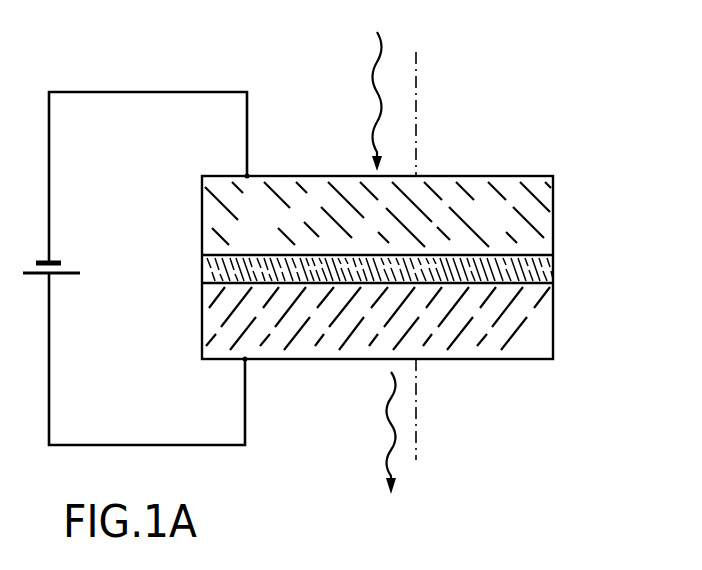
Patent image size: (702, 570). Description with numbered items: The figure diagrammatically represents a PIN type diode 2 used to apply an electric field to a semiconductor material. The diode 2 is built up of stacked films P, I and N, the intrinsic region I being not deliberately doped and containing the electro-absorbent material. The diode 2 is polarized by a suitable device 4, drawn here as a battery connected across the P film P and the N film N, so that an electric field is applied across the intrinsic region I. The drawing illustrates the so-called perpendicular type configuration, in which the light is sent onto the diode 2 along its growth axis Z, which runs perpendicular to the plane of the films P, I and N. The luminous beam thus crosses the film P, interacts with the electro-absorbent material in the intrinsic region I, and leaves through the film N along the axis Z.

The PIN type diode 2 is at (411, 306).
The polarizing device 4 is at (66, 270).
The P film P is at (530, 226).
The intrinsic region I is at (540, 276).
The N film N is at (524, 338).
The growth axis Z is at (431, 252).